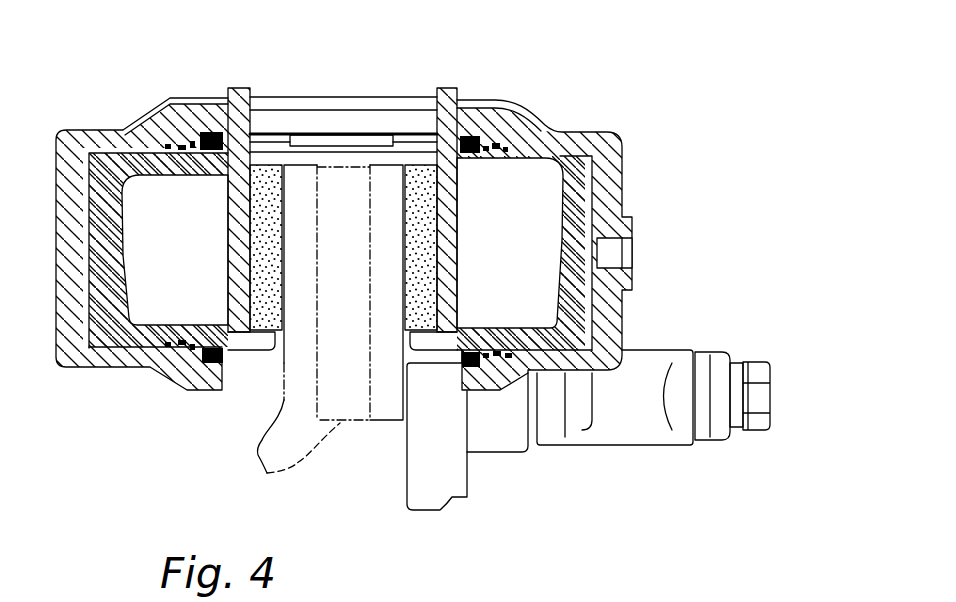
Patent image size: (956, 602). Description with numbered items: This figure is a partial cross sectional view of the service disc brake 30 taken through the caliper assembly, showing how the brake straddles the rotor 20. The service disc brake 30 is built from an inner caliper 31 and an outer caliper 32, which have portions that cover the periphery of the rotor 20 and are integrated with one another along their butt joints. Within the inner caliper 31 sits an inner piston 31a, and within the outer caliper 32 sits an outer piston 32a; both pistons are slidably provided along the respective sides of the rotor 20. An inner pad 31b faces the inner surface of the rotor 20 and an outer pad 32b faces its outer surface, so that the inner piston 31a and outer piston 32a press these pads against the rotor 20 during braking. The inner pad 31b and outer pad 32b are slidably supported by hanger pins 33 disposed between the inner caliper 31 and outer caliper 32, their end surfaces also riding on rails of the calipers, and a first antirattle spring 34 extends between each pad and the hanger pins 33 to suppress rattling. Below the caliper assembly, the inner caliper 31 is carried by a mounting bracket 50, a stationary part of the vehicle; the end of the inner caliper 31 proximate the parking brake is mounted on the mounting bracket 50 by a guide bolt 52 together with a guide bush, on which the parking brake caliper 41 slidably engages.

The rotor 20 is at (340, 415).
The service disc brake 30 is at (521, 82).
The inner caliper 31 is at (612, 134).
The inner piston 31a is at (545, 180).
The inner pad 31b is at (422, 262).
The outer caliper 32 is at (90, 130).
The outer piston 32a is at (123, 188).
The outer pad 32b is at (266, 268).
The hanger pins 33 is at (402, 127).
The first antirattle spring 34 is at (350, 140).
The parking brake caliper 41 is at (633, 440).
The mounting bracket 50 is at (445, 487).
The guide bolt 52 is at (760, 400).